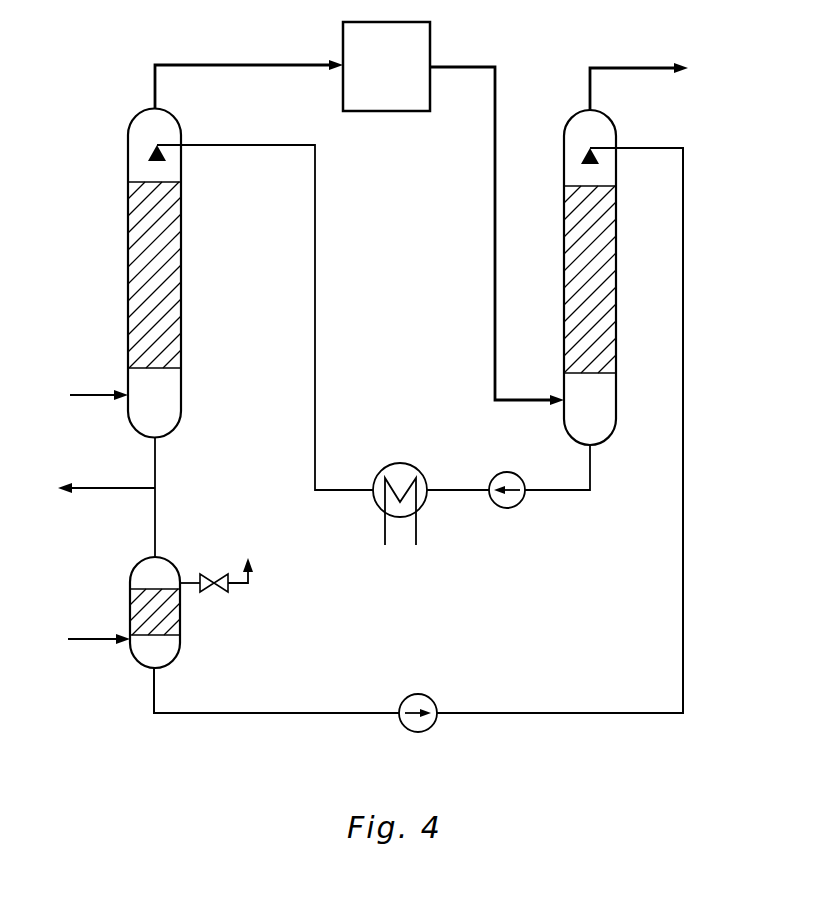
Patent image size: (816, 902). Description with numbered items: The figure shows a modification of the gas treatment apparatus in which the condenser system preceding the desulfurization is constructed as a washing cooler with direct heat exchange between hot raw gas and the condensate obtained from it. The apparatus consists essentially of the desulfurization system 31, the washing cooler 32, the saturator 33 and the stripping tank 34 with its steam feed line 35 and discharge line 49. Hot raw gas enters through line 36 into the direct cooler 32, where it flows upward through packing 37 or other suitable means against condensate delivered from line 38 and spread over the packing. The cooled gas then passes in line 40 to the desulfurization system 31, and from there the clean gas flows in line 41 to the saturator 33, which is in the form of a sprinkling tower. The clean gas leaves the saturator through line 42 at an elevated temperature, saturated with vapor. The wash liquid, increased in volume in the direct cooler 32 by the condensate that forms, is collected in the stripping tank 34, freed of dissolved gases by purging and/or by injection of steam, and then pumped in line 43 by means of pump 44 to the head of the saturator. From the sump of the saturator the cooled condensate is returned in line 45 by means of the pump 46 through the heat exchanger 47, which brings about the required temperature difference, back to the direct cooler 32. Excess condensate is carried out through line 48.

The desulfurization system 31 is at (386, 66).
The washing cooler 32 is at (138, 273).
The saturator 33 is at (610, 277).
The stripping tank 34 is at (204, 570).
The steam feed line 35 is at (124, 612).
The raw gas line 36 is at (99, 381).
The packing 37 is at (154, 275).
The condensate line 38 is at (265, 302).
The gas line 40 is at (249, 72).
The clean gas line 41 is at (497, 220).
The clean gas outlet line 42 is at (639, 74).
The pump line 43 is at (418, 435).
The pump 44 is at (433, 726).
The condensate return line 45 is at (558, 472).
The pump 46 is at (476, 476).
The heat exchanger 47 is at (389, 500).
The excess condensate line 48 is at (106, 497).
The discharge line 49 is at (252, 555).